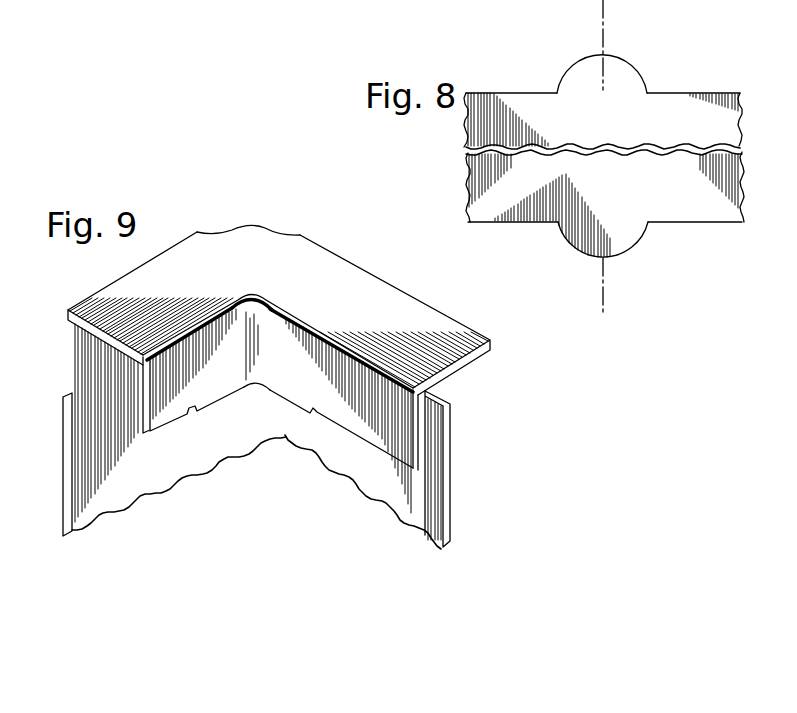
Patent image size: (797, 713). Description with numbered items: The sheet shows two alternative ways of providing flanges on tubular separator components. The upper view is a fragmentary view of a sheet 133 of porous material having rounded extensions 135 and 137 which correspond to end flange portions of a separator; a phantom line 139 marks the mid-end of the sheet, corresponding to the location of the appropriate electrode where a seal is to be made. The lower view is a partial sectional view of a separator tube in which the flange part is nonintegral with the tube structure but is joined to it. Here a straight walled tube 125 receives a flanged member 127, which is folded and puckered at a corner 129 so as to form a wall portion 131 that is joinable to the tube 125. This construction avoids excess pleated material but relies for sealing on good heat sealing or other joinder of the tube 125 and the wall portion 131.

In FIG. 9, the straight walled tube 125 is at (113, 497).
In FIG. 9, the flanged member 127 is at (328, 245).
In FIG. 9, the corner 129 is at (255, 370).
In FIG. 9, the wall portion 131 is at (360, 420).
In FIG. 8, the sheet 133 is at (531, 78).
In FIG. 8, the extension 135 is at (625, 65).
In FIG. 8, the extension 137 is at (625, 243).
In FIG. 8, the phantom line 139 is at (605, 18).